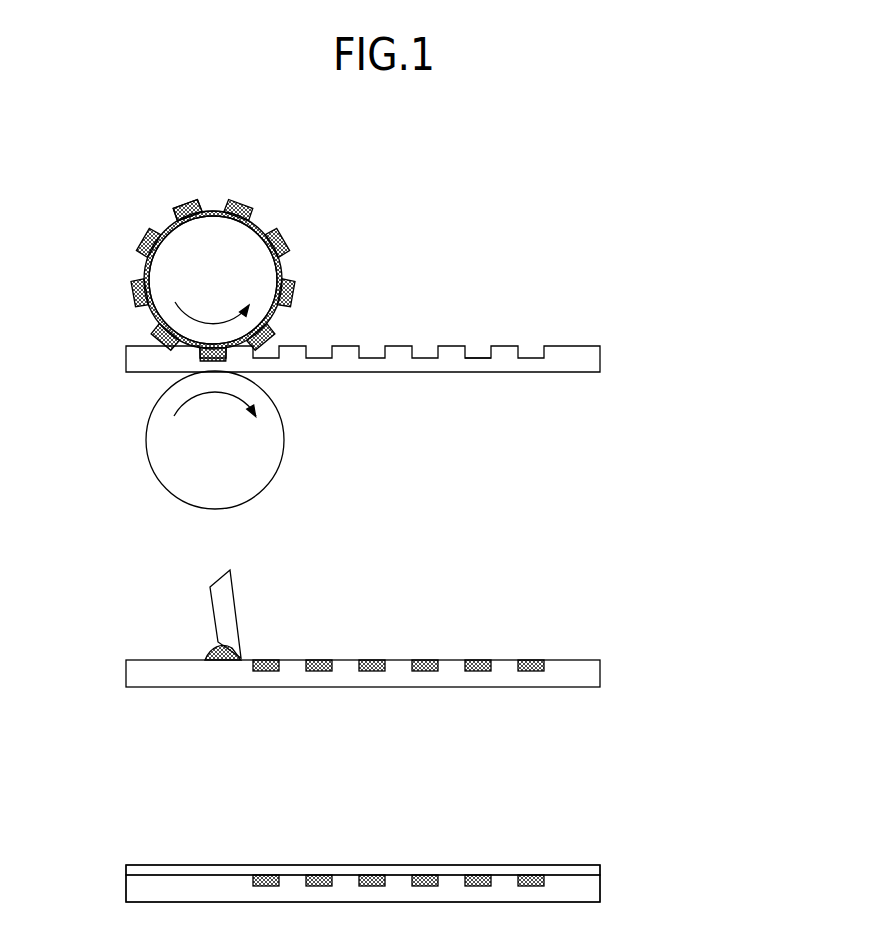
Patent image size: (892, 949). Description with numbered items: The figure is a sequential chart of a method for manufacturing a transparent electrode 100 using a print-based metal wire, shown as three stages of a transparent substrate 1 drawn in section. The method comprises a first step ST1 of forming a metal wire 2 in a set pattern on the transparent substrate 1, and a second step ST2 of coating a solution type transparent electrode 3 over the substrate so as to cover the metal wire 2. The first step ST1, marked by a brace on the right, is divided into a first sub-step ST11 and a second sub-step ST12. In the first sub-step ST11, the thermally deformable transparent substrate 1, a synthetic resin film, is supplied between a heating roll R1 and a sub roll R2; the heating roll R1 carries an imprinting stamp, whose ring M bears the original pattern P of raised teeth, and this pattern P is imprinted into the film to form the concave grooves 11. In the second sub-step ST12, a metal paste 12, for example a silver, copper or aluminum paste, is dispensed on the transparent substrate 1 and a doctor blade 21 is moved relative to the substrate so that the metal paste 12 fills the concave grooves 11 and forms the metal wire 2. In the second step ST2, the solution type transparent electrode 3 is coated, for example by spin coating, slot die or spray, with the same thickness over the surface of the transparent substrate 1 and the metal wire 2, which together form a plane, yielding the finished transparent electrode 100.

The transparent substrate 1 is at (588, 361).
The concave grooves 11 is at (473, 357).
The heating roll R1 is at (265, 215).
The pattern P is at (188, 207).
The roller ring M is at (214, 211).
The sub roll R2 is at (282, 458).
The first sub-step ST11 is at (607, 388).
The second sub-step ST12 is at (608, 643).
The first step ST1 is at (698, 430).
The doctor blade 21 is at (226, 598).
The metal paste 12 is at (212, 646).
The metal wire 2 is at (423, 660).
The solution type transparent electrode 3 is at (504, 867).
The second step ST2 is at (608, 852).
The transparent electrode 100 is at (116, 888).